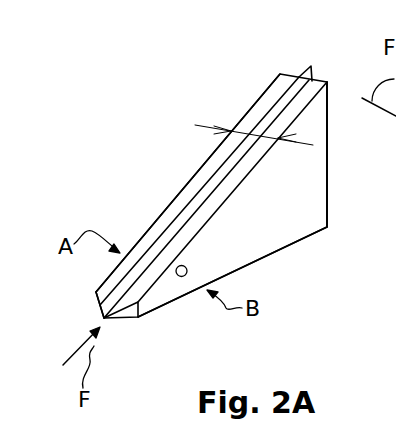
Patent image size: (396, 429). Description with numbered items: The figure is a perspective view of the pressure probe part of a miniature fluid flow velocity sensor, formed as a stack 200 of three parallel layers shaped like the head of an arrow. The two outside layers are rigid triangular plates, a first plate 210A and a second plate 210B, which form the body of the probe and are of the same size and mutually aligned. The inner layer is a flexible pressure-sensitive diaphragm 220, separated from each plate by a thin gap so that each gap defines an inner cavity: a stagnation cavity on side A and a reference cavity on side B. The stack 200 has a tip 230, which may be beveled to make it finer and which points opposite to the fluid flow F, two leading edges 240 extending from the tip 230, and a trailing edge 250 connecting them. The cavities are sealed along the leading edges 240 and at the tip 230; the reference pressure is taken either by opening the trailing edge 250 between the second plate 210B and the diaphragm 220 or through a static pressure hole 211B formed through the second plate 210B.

The stack 200 is at (122, 211).
The first plate 210A is at (167, 203).
The second plate 210B is at (263, 235).
The static pressure hole 211B is at (183, 277).
The flexible pressure-sensitive diaphragm 220 is at (305, 74).
The tip 230 is at (105, 328).
The leading edges 240 is at (203, 127).
The trailing edge 250 is at (328, 173).